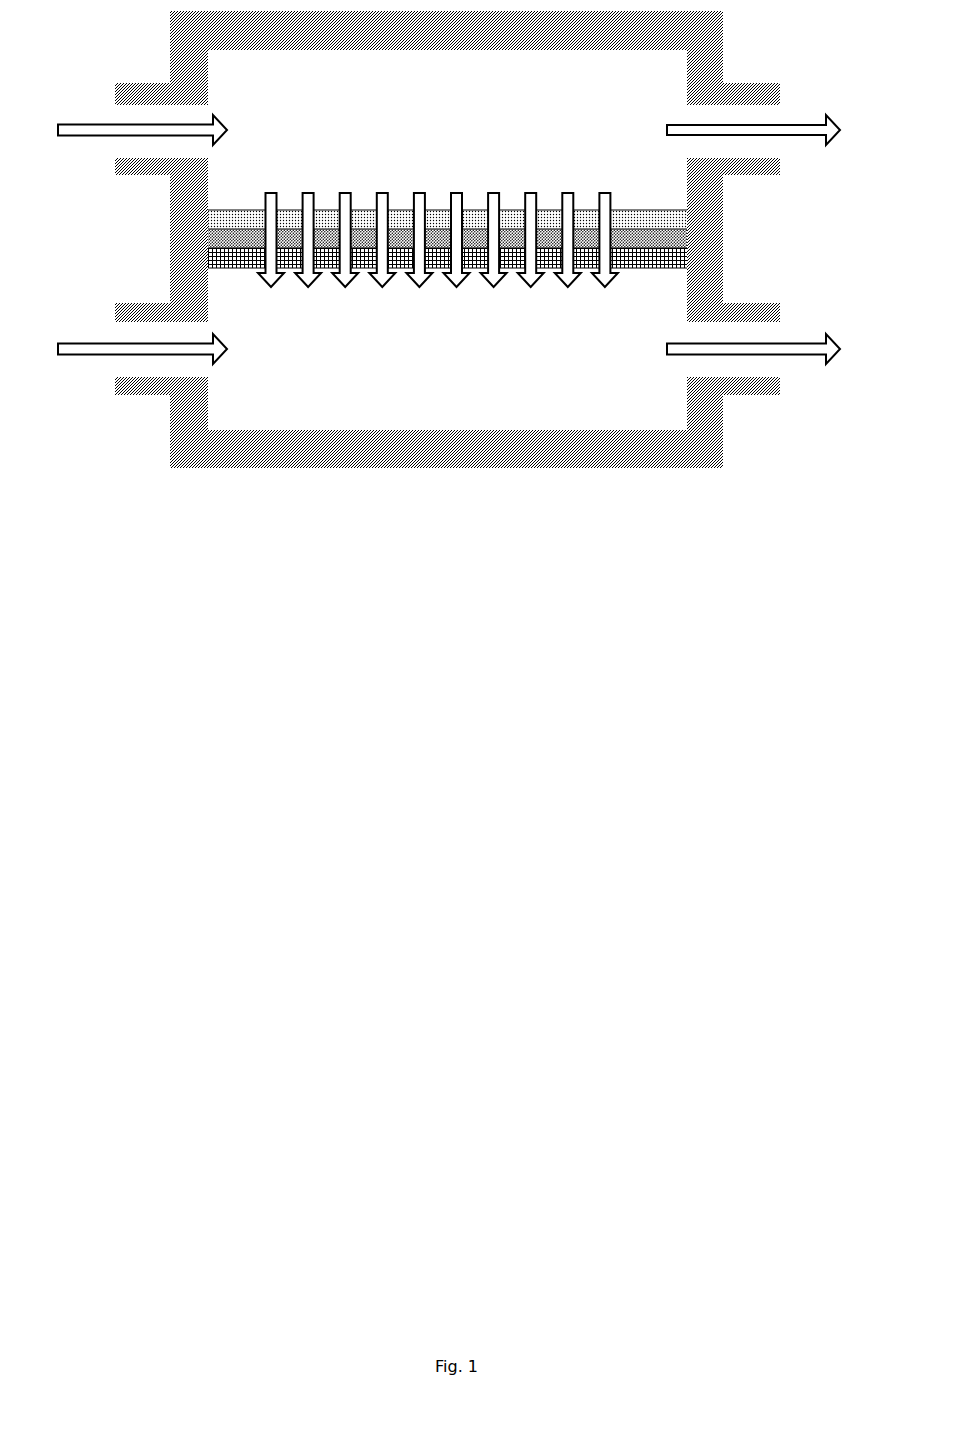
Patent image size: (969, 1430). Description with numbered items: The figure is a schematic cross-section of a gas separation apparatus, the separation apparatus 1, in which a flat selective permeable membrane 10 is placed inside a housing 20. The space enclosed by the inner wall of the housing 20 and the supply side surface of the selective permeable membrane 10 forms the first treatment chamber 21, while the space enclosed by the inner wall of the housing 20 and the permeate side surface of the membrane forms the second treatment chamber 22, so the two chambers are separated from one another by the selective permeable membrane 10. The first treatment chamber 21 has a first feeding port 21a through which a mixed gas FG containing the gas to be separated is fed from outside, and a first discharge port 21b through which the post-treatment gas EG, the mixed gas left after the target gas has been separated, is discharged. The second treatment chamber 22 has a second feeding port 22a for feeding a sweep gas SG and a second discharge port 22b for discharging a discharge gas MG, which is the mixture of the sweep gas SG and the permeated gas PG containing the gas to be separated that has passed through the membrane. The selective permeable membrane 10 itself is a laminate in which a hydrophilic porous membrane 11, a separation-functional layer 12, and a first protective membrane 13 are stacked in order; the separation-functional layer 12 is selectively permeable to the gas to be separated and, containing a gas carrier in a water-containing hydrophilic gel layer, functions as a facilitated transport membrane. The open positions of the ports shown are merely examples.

The separation apparatus 1 is at (97, 31).
The selective permeable membrane 10 is at (219, 283).
The hydrophilic porous membrane 11 is at (620, 218).
The separation-functional layer 12 is at (633, 238).
The first protective membrane 13 is at (628, 267).
The housing 20 is at (727, 42).
The first treatment chamber 21 is at (462, 110).
The first feeding port 21a is at (134, 148).
The first discharge port 21b is at (760, 143).
The second treatment chamber 22 is at (462, 392).
The second feeding port 22a is at (134, 361).
The second discharge port 22b is at (757, 362).